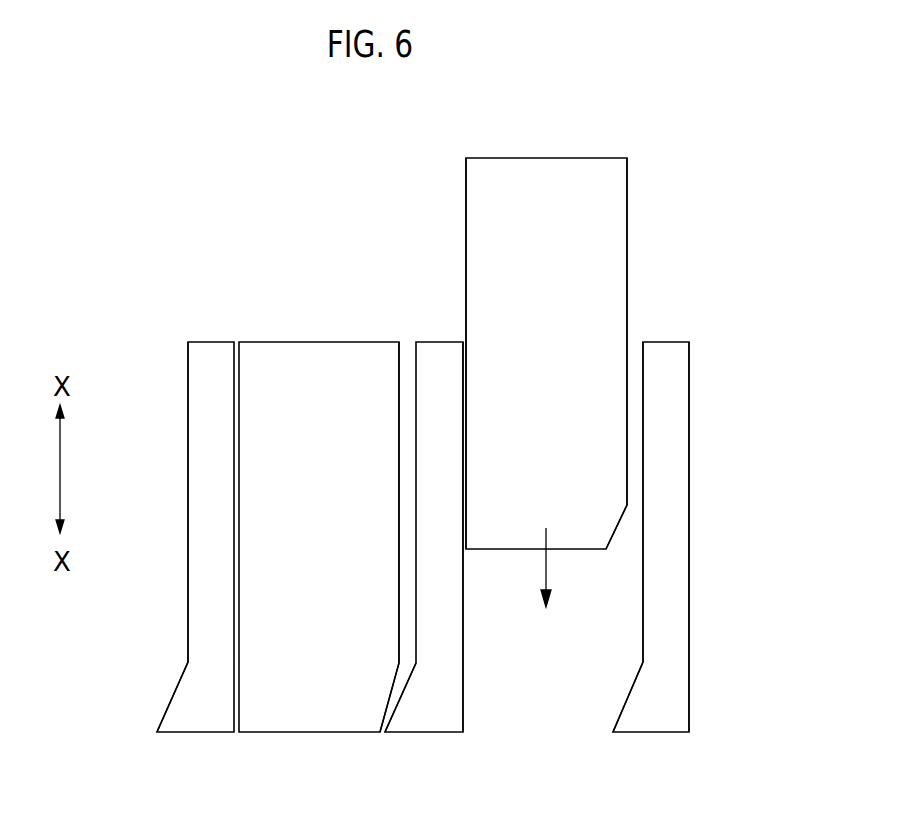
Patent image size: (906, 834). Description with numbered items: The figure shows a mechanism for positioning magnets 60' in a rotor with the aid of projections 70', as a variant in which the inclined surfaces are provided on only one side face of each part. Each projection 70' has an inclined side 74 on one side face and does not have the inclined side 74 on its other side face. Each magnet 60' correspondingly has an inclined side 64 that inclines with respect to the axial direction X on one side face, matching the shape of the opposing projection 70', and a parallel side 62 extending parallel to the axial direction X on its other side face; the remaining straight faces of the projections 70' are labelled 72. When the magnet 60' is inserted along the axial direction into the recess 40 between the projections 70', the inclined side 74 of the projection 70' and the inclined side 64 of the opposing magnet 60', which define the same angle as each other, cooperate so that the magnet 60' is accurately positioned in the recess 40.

The recess 40 is at (406, 336).
The magnet 60' is at (489, 417).
The parallel side 62 is at (466, 190).
The inclined side 64 is at (613, 528).
The projection 70' is at (442, 464).
The side surface of receiving member 72 is at (188, 465).
The inclined side 74 is at (170, 685).